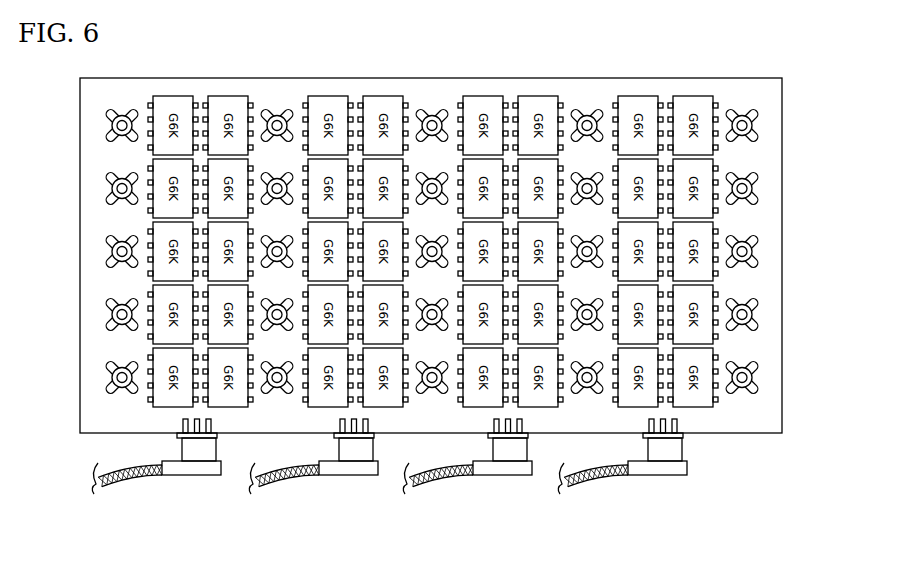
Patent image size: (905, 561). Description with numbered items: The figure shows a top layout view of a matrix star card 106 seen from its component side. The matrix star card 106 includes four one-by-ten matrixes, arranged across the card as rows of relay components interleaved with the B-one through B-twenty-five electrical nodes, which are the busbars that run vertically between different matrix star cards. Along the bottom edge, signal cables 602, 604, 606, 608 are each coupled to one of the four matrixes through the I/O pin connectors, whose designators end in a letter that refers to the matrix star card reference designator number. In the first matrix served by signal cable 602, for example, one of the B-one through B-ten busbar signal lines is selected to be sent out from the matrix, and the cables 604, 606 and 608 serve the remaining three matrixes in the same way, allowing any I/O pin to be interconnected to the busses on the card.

The matrix star card 106 is at (333, 78).
The signal cable 602 is at (194, 477).
The signal cable 604 is at (354, 477).
The signal cable 606 is at (505, 477).
The signal cable 608 is at (655, 477).